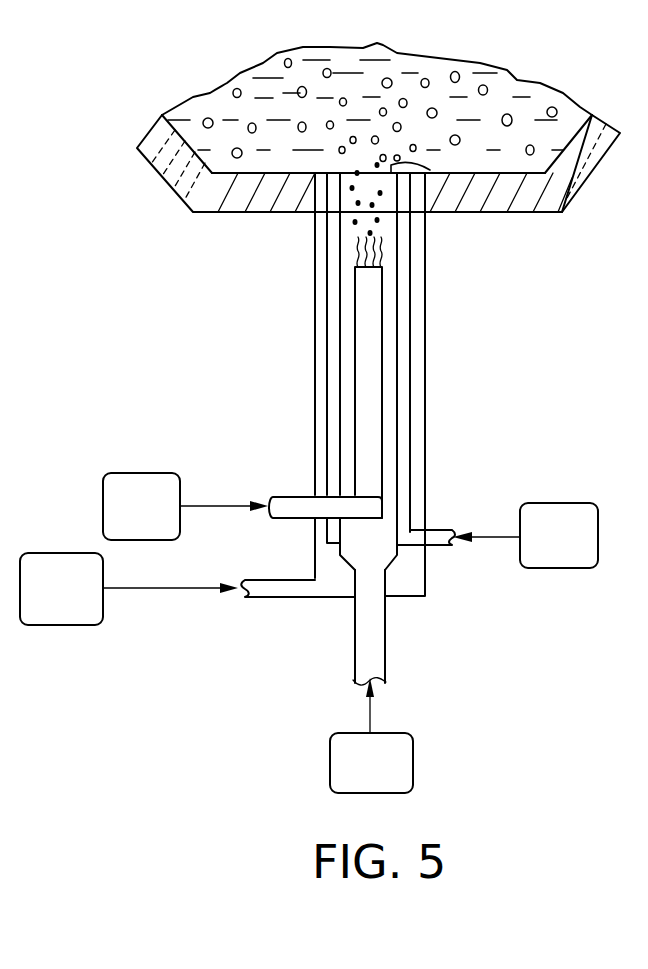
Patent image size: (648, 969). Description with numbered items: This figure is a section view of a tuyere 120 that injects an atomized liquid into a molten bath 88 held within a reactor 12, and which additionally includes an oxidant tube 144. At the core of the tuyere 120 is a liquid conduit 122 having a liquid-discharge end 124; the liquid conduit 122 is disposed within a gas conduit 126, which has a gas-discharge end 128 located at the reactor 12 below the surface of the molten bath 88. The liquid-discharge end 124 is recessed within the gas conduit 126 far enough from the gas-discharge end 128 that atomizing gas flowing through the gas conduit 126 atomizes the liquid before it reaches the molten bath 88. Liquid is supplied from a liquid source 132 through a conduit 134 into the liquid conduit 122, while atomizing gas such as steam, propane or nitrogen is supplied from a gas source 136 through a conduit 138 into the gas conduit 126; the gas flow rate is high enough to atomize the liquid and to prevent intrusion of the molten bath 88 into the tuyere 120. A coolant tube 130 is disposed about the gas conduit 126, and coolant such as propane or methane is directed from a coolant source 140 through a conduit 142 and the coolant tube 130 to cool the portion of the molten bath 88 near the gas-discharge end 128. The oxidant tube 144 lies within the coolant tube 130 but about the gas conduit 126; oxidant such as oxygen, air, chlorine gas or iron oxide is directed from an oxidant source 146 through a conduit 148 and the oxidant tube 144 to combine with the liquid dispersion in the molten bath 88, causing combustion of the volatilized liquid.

The molten bath 88 is at (227, 83).
The reactor 12 is at (580, 187).
The tuyere 120 is at (298, 327).
The liquid conduit 122 is at (353, 407).
The liquid-discharge end 124 is at (357, 267).
The gas conduit 126 is at (398, 305).
The gas-discharge end 128 is at (387, 178).
The oxidant tube 144 is at (412, 367).
The coolant tube 130 is at (425, 433).
The conduit 134 is at (222, 503).
The liquid source 132 is at (162, 520).
The coolant source 140 is at (82, 603).
The conduit 142 is at (176, 592).
The oxidant source 146 is at (580, 551).
The conduit 148 is at (495, 545).
The gas source 136 is at (392, 778).
The conduit 138 is at (374, 718).